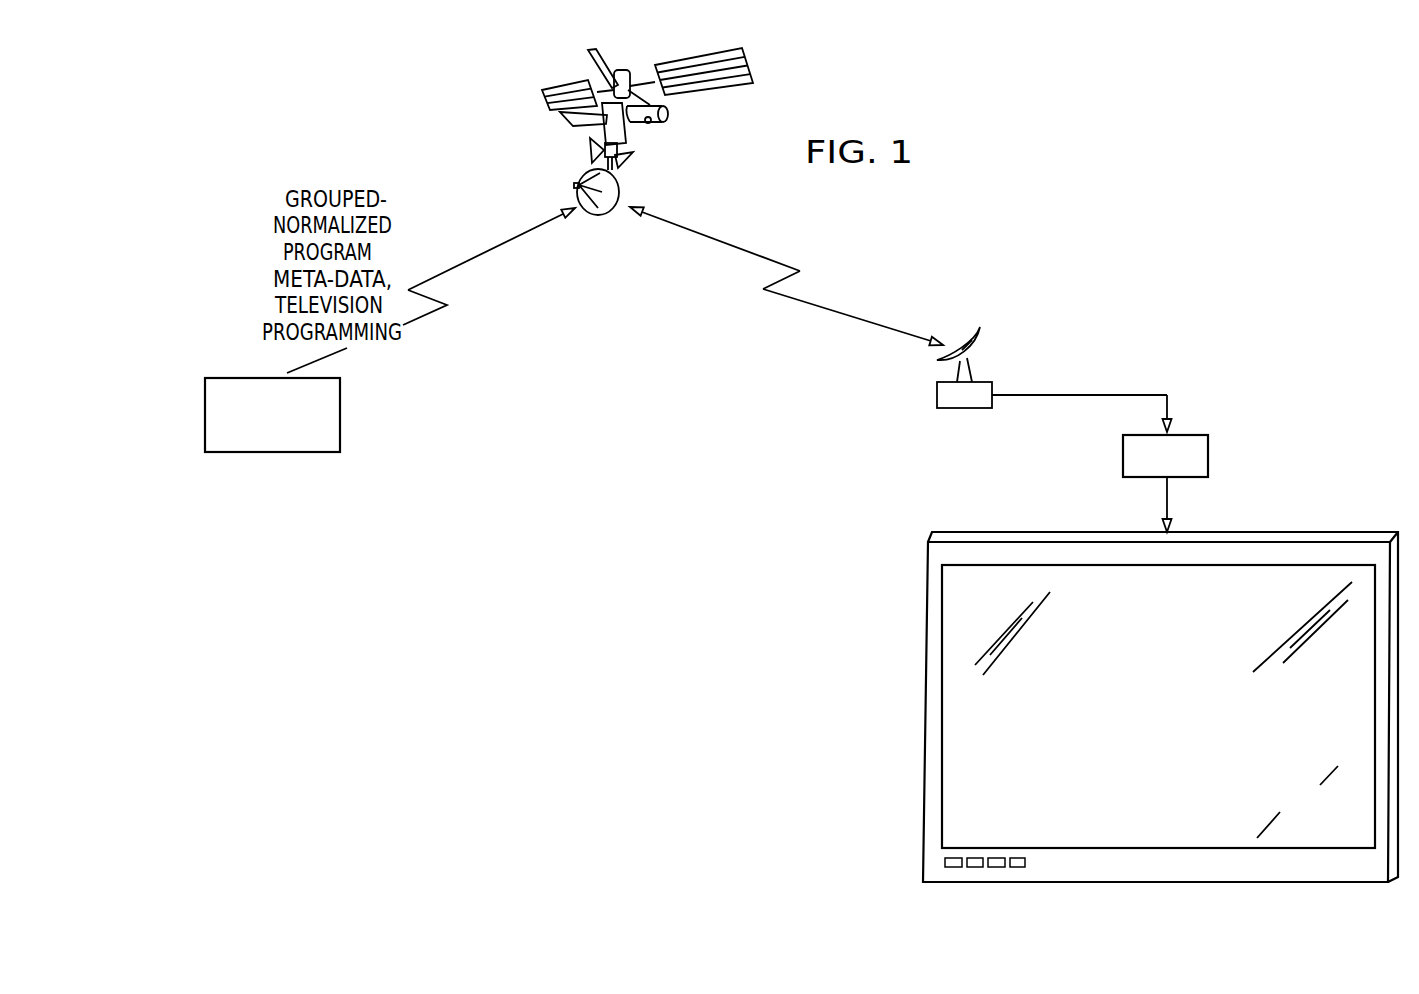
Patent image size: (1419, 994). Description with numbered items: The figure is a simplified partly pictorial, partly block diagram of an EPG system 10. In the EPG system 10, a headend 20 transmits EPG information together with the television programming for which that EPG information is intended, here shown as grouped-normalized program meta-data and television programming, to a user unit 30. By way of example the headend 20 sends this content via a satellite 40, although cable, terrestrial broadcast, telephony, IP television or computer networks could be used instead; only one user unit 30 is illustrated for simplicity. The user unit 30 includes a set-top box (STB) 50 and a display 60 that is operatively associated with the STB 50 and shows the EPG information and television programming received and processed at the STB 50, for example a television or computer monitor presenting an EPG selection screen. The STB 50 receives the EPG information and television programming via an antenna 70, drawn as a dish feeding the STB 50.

The EPG system 10 is at (662, 611).
The headend 20 is at (205, 404).
The user unit 30 is at (1266, 437).
The satellite 40 is at (543, 98).
The set-top box (STB) 50 is at (1123, 467).
The display 60 is at (925, 618).
The antenna 70 is at (960, 409).